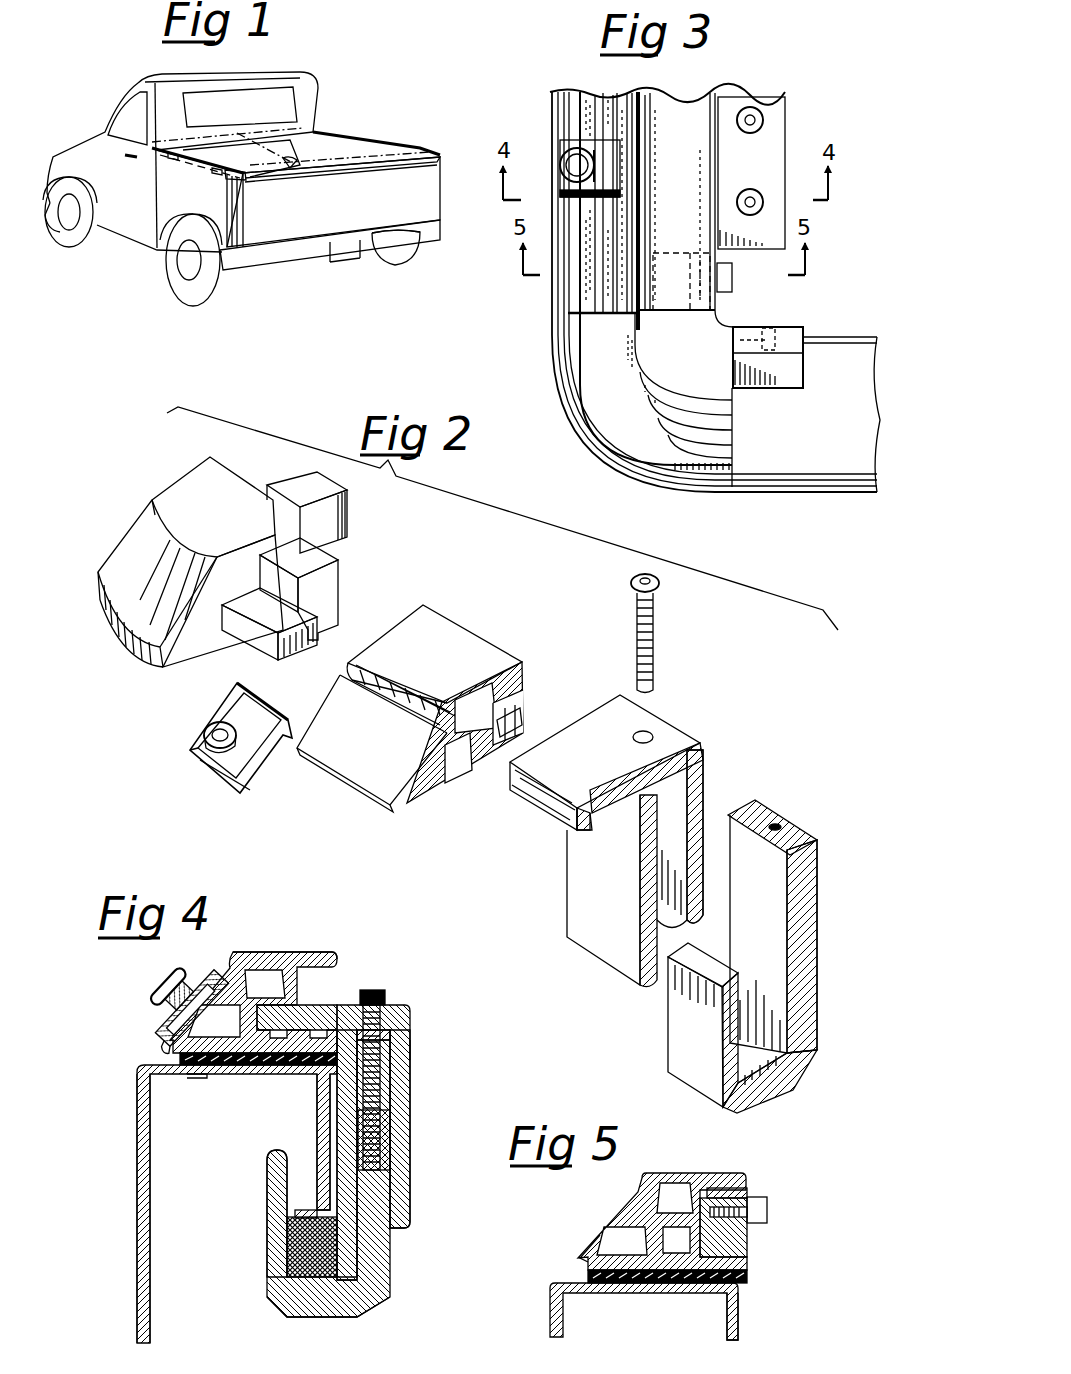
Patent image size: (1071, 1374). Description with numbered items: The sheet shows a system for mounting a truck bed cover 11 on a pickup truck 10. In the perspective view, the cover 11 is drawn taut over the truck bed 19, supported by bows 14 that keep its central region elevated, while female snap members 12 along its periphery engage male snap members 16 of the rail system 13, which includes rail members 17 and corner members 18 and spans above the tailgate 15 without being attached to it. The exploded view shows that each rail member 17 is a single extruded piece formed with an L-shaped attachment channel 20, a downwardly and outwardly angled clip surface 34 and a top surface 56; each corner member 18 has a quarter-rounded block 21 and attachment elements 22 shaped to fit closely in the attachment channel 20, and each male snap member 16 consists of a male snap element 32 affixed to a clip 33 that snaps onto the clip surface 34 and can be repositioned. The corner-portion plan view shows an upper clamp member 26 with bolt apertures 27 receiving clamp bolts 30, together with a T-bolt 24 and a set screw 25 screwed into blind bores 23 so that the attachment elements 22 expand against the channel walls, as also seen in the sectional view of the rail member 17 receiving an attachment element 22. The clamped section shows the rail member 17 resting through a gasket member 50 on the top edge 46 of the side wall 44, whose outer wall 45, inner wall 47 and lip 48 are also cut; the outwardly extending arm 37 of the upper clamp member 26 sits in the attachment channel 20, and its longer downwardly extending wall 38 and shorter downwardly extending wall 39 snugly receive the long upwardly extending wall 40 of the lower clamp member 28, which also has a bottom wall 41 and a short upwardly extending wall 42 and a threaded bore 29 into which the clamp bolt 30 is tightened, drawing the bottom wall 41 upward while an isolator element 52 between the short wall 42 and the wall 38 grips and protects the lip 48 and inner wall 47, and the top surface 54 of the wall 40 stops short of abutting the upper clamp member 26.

In FIG. 1, the pickup truck 10 is at (132, 78).
In FIG. 1, the truck bed cover 11 is at (353, 150).
In FIG. 1, the female snap members 12 is at (410, 150).
In FIG. 1, the rail system 13 is at (290, 167).
In FIG. 4, the rail system 13 is at (435, 1090).
In FIG. 1, the bows 14 is at (220, 173).
In FIG. 1, the tailgate 15 is at (387, 217).
In FIG. 1, the male snap members 16 is at (173, 158).
In FIG. 3, the male snap members 16 is at (578, 138).
In FIG. 2, the male snap members 16 is at (220, 755).
In FIG. 4, the male snap members 16 is at (142, 1008).
In FIG. 1, the rail member 17 is at (193, 167).
In FIG. 3, the rail member 17 is at (578, 290).
In FIG. 2, the rail member 17 is at (434, 723).
In FIG. 4, the rail member 17 is at (253, 976).
In FIG. 5, the rail member 17 is at (608, 1188).
In FIG. 1, the corner member 18 is at (240, 183).
In FIG. 3, the corner member 18 is at (552, 375).
In FIG. 2, the corner member 18 is at (105, 640).
In FIG. 1, the truck bed 19 is at (340, 213).
In FIG. 2, the attachment channel 20 is at (513, 705).
In FIG. 3, the quarter-rounded block 21 is at (665, 370).
In FIG. 2, the quarter-rounded block 21 is at (192, 482).
In FIG. 3, the attachment elements 22 is at (683, 253).
In FIG. 2, the attachment elements 22 is at (343, 525).
In FIG. 5, the attachment elements 22 is at (738, 1238).
In FIG. 3, the blind bores 23 is at (747, 343).
In FIG. 5, the blind bores 23 is at (745, 1188).
In FIG. 3, the T-bolt 24 is at (727, 283).
In FIG. 5, the T-bolt 24 is at (767, 1210).
In FIG. 3, the set screw 25 is at (773, 328).
In FIG. 3, the upper clamp member 26 is at (770, 142).
In FIG. 2, the upper clamp member 26 is at (619, 838).
In FIG. 4, the upper clamp member 26 is at (364, 1124).
In FIG. 2, the bolt aperture 27 is at (650, 733).
In FIG. 2, the lower clamp member 28 is at (780, 951).
In FIG. 4, the lower clamp member 28 is at (342, 1196).
In FIG. 2, the threaded bore 29 is at (777, 827).
In FIG. 3, the clamp bolt 30 is at (762, 115).
In FIG. 2, the clamp bolt 30 is at (635, 588).
In FIG. 4, the clamp bolt 30 is at (377, 991).
In FIG. 2, the male snap element 32 is at (215, 735).
In FIG. 2, the clip 33 is at (230, 778).
In FIG. 2, the clip surface 34 is at (340, 753).
In FIG. 2, the outwardly extending arm 37 is at (575, 815).
In FIG. 4, the outwardly extending arm 37 is at (308, 1013).
In FIG. 2, the longer downwardly extending wall 38 is at (647, 883).
In FIG. 4, the longer downwardly extending wall 38 is at (343, 1100).
In FIG. 2, the shorter downwardly extending wall 39 is at (693, 813).
In FIG. 4, the shorter downwardly extending wall 39 is at (405, 1108).
In FIG. 2, the long upwardly extending wall 40 is at (807, 963).
In FIG. 4, the long upwardly extending wall 40 is at (382, 1143).
In FIG. 2, the bottom wall 41 is at (773, 1082).
In FIG. 4, the bottom wall 41 is at (338, 1307).
In FIG. 2, the short upwardly extending wall 42 is at (727, 1033).
In FIG. 4, the short upwardly extending wall 42 is at (273, 1180).
In FIG. 4, the side wall 44 is at (205, 1204).
In FIG. 4, the outer wall 45 is at (140, 1167).
In FIG. 5, the outer wall 45 is at (552, 1313).
In FIG. 4, the top edge 46 is at (197, 1076).
In FIG. 4, the inner wall 47 is at (327, 1133).
In FIG. 5, the inner wall 47 is at (738, 1323).
In FIG. 4, the lip 48 is at (307, 1213).
In FIG. 4, the gasket member 50 is at (180, 1060).
In FIG. 5, the gasket member 50 is at (747, 1273).
In FIG. 4, the isolator element 52 is at (290, 1253).
In FIG. 4, the top surface 54 is at (397, 1042).
In FIG. 4, the top surface 56 is at (257, 952).